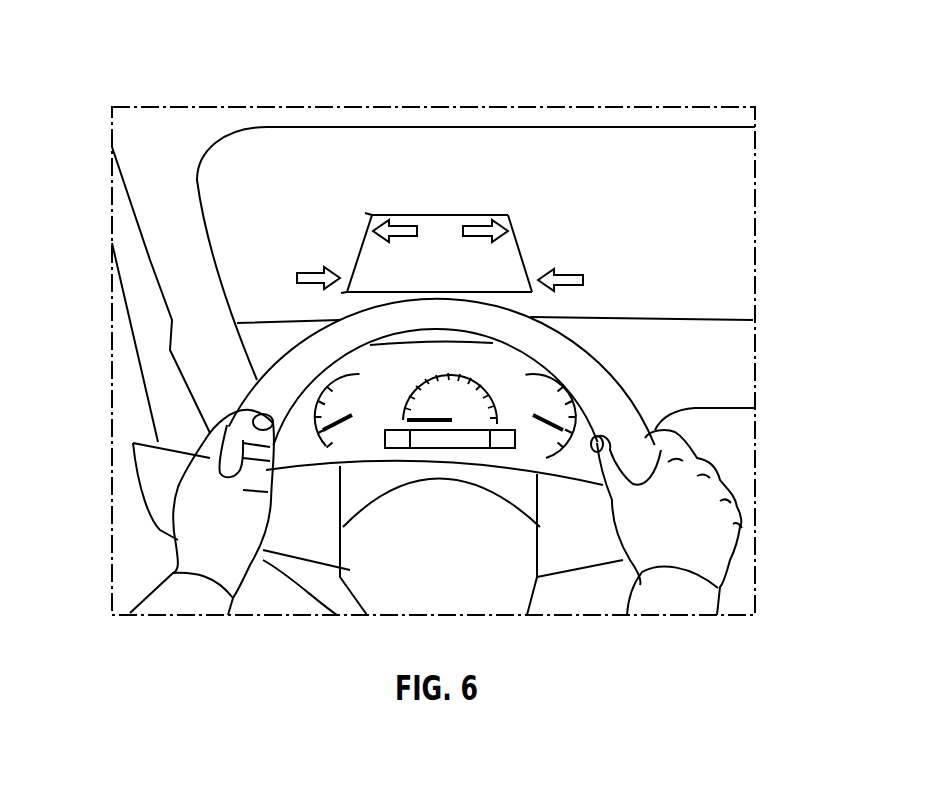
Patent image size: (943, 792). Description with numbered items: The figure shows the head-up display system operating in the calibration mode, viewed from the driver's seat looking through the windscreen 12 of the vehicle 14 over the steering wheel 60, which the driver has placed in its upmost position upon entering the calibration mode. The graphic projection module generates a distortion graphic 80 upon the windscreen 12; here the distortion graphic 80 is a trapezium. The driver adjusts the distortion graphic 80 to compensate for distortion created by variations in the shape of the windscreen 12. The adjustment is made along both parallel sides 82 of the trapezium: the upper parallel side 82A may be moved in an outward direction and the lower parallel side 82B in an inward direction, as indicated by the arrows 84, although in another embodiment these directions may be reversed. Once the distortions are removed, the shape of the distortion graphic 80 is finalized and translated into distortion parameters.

The windscreen 12 is at (548, 131).
The vehicle 14 is at (165, 131).
The steering wheel 60 is at (603, 408).
The distortion graphic 80 is at (480, 191).
The parallel sides 82 is at (366, 213).
The upper parallel side 82A is at (415, 214).
The lower parallel side 82B is at (511, 292).
The arrows 84 is at (510, 216).